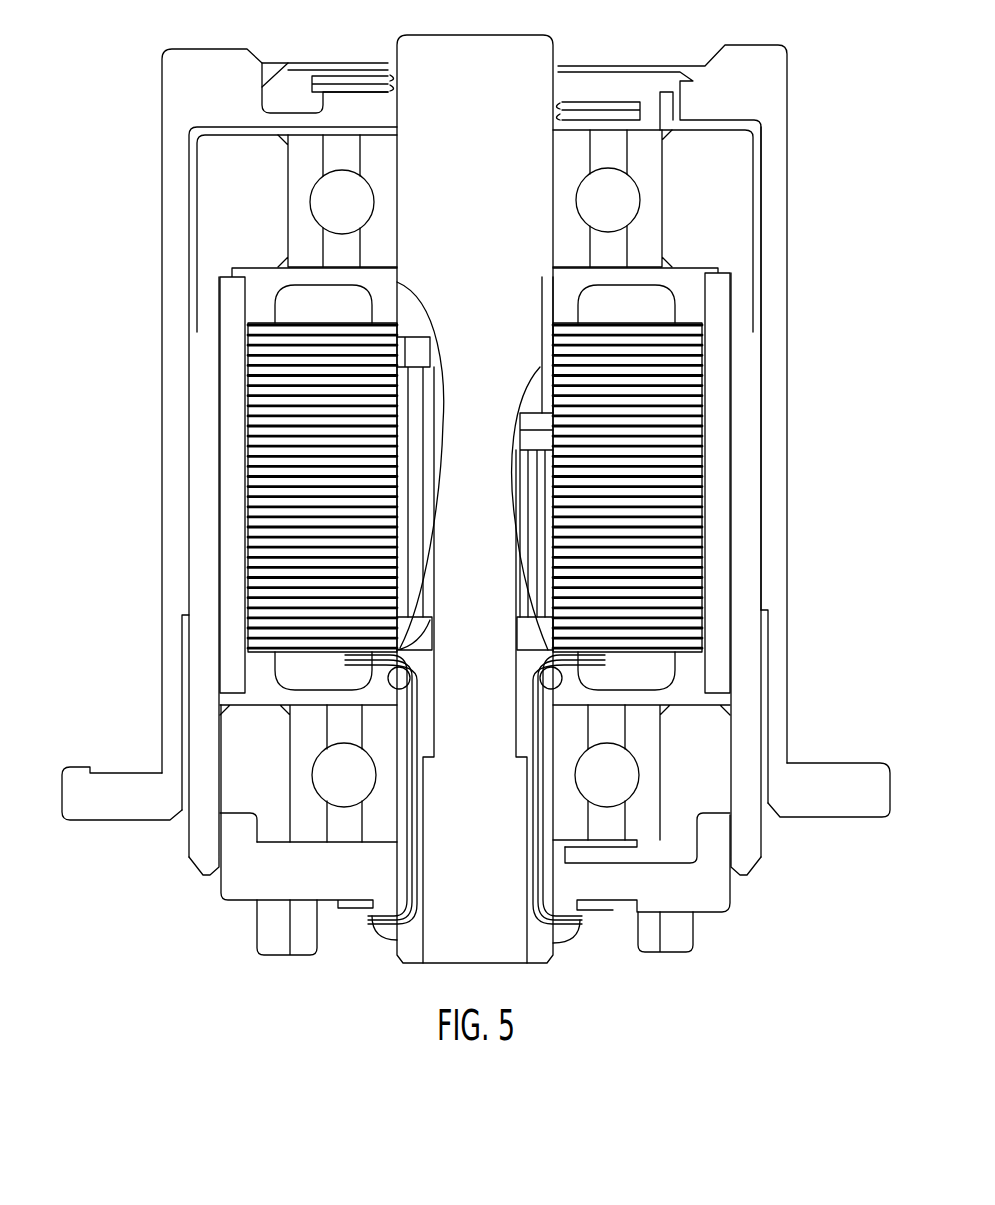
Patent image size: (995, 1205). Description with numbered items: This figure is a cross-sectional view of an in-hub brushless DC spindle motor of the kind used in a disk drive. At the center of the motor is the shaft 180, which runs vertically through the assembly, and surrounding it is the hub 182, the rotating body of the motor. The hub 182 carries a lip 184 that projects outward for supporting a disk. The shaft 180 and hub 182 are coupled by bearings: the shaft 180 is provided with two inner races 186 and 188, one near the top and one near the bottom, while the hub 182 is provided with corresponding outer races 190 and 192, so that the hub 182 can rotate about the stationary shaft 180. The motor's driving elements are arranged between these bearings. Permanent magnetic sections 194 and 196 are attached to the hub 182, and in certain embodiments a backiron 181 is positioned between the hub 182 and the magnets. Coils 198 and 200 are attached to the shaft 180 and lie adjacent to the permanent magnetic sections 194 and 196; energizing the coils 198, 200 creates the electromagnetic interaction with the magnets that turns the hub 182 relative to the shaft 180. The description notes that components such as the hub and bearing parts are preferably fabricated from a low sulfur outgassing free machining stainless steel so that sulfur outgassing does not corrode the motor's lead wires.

The shaft 180 is at (520, 240).
The backiron 181 is at (745, 517).
The hub 182 is at (718, 96).
The lip 184 is at (877, 775).
The inner race 186 is at (385, 182).
The inner race 188 is at (383, 810).
The outer race 190 is at (647, 181).
The outer race 192 is at (645, 727).
The permanent magnetic section 194 is at (718, 423).
The permanent magnetic section 196 is at (230, 540).
The coil 198 is at (607, 373).
The coil 200 is at (348, 495).